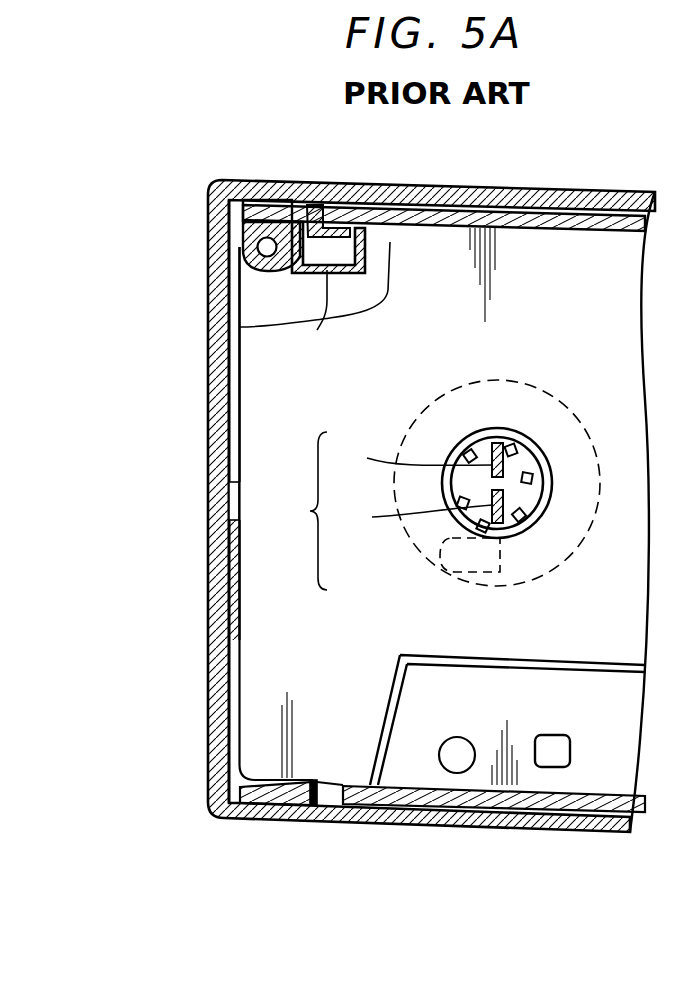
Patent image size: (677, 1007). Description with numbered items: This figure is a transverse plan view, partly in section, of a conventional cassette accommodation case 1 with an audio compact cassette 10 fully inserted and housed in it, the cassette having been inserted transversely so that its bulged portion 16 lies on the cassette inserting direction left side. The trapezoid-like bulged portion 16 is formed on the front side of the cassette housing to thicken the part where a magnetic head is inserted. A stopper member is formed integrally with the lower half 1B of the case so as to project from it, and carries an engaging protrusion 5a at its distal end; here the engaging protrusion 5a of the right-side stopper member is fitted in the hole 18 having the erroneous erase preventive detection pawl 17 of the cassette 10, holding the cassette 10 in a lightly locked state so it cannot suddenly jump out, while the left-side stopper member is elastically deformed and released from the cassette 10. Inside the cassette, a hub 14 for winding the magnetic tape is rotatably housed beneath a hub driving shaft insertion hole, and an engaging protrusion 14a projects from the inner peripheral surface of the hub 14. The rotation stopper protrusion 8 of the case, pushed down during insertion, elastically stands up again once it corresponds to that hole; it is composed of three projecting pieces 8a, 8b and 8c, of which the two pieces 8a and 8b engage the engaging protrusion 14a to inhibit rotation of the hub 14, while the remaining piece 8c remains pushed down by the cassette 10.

The cassette accommodation case 1 is at (208, 362).
The lower half 1B is at (214, 440).
The engaging protrusion 5a is at (321, 322).
The rotation stopper protrusion 8 is at (307, 511).
The projecting piece 8a is at (412, 455).
The projecting piece 8b is at (412, 514).
The projecting piece 8c is at (440, 556).
The cassette 10 is at (257, 558).
The hub 14 is at (498, 378).
The engaging protrusion 14a is at (505, 465).
The bulged portion 16 is at (603, 768).
The erroneous erase preventive detection pawl 17 is at (338, 203).
The hole 18 is at (312, 203).